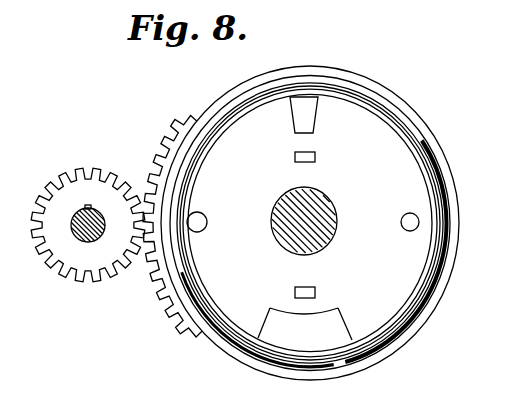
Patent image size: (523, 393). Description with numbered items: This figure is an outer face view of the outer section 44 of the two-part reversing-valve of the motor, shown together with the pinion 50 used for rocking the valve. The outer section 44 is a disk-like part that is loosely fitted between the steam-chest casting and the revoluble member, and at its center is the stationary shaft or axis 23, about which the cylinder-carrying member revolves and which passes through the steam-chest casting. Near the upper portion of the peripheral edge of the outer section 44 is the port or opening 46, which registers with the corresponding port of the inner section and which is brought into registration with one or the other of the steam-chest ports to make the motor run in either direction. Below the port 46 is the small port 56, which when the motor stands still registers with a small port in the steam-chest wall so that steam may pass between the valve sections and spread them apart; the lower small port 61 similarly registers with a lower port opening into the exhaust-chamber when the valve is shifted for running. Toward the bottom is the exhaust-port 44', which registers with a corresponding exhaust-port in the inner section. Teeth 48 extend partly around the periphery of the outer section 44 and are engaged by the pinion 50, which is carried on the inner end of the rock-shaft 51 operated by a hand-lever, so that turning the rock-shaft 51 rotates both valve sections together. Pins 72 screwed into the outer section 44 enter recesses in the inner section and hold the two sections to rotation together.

The outer section of the reversing-valve 44 is at (310, 223).
The exhaust-port 44' is at (308, 350).
The teeth 48 is at (153, 150).
The pinion 50 is at (62, 181).
The rock-shaft 51 is at (86, 242).
The stationary shaft or axis 23 is at (336, 239).
The port or opening 46 is at (290, 116).
The small port 56 is at (315, 158).
The pins 72 is at (206, 218).
The lower small port 61 is at (315, 292).